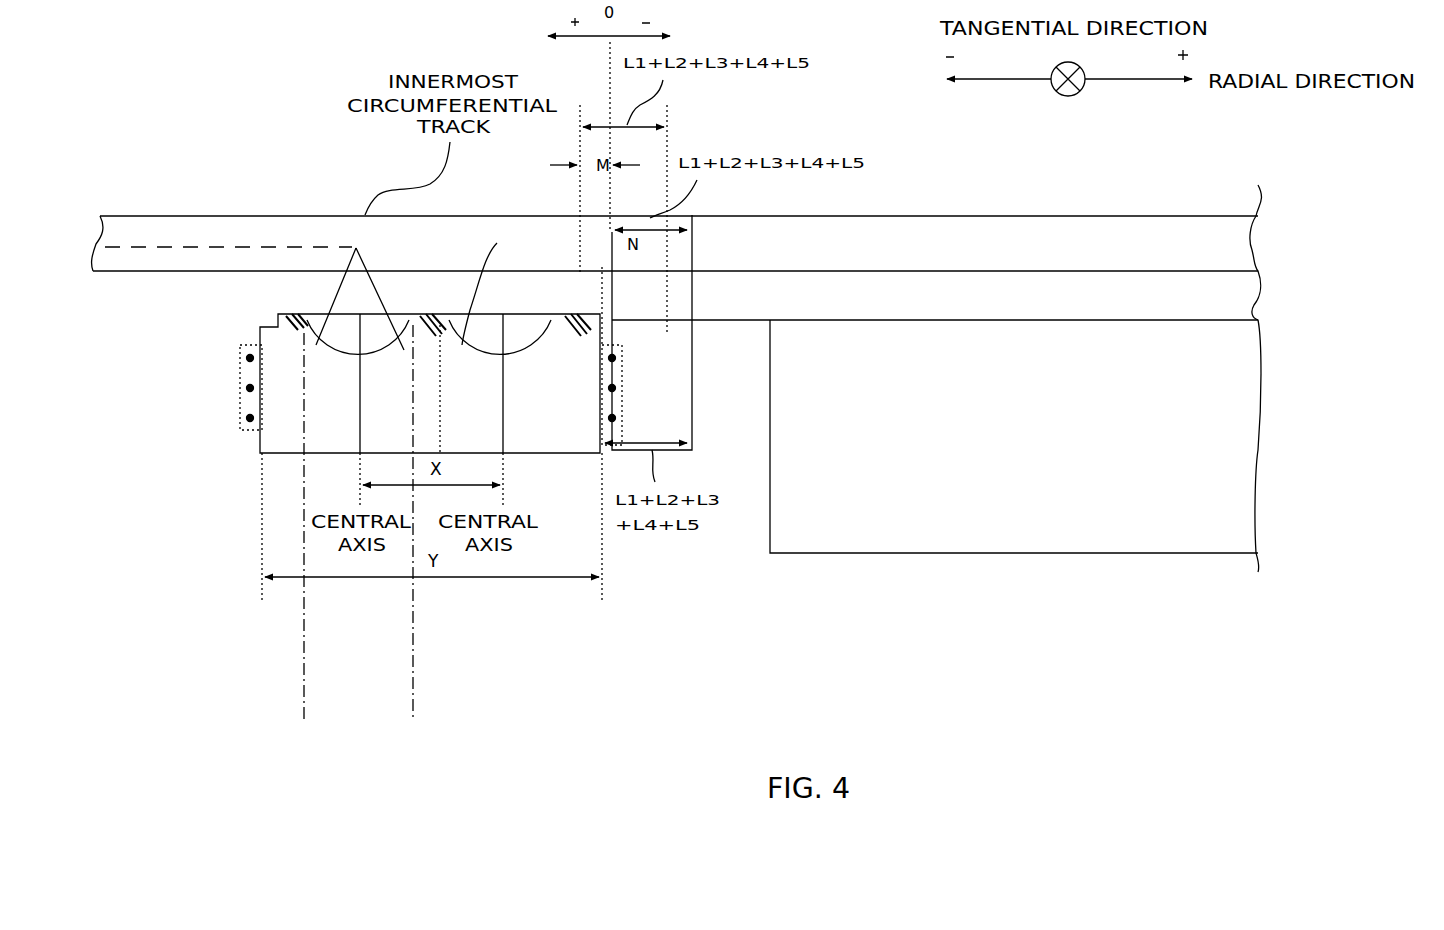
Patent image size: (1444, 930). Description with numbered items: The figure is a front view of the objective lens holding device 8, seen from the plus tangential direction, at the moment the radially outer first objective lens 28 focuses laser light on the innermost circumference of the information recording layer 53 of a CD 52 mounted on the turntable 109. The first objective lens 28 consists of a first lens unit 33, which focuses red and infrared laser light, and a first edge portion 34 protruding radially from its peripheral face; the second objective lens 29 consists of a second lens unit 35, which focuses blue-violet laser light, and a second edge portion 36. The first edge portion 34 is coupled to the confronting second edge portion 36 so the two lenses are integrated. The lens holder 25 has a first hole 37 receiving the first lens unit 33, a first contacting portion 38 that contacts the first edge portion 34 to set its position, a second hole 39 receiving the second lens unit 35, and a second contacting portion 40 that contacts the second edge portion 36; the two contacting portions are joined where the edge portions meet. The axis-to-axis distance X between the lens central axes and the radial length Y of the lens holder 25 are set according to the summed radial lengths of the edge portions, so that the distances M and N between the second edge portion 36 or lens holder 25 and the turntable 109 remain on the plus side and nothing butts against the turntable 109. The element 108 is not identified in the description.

The objective lens holding device 8 is at (260, 455).
The lens holder 25 is at (300, 455).
The first objective lens 28 is at (325, 396).
The second objective lens 29 is at (455, 396).
The first lens unit 33 is at (380, 395).
The first edge portion 34 is at (286, 318).
The second lens unit 35 is at (525, 396).
The second edge portion 36 is at (572, 318).
The first hole 37 is at (340, 455).
The first contacting portion 38 is at (292, 332).
The second hole 39 is at (543, 455).
The second contacting portion 40 is at (567, 340).
The CD 52 is at (285, 215).
The information recording layer 53 is at (175, 247).
The hub 108 is at (1078, 553).
The turntable 109 is at (740, 321).